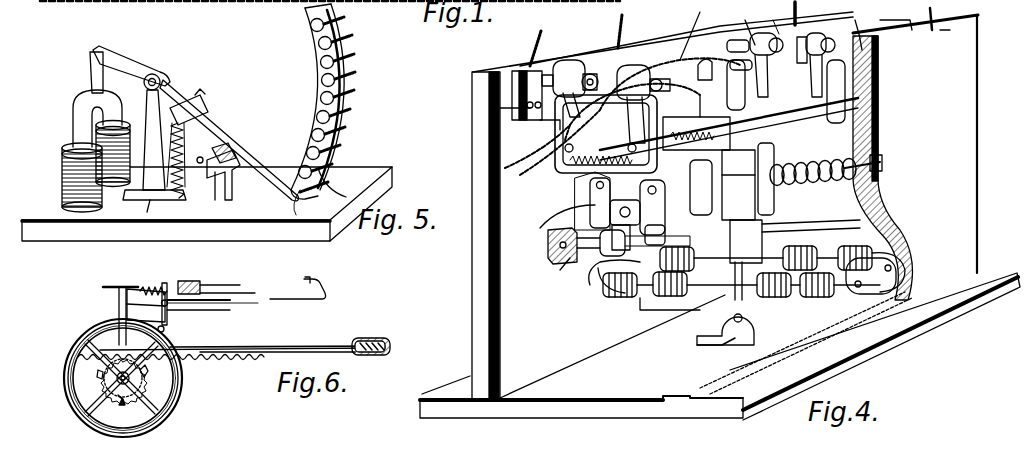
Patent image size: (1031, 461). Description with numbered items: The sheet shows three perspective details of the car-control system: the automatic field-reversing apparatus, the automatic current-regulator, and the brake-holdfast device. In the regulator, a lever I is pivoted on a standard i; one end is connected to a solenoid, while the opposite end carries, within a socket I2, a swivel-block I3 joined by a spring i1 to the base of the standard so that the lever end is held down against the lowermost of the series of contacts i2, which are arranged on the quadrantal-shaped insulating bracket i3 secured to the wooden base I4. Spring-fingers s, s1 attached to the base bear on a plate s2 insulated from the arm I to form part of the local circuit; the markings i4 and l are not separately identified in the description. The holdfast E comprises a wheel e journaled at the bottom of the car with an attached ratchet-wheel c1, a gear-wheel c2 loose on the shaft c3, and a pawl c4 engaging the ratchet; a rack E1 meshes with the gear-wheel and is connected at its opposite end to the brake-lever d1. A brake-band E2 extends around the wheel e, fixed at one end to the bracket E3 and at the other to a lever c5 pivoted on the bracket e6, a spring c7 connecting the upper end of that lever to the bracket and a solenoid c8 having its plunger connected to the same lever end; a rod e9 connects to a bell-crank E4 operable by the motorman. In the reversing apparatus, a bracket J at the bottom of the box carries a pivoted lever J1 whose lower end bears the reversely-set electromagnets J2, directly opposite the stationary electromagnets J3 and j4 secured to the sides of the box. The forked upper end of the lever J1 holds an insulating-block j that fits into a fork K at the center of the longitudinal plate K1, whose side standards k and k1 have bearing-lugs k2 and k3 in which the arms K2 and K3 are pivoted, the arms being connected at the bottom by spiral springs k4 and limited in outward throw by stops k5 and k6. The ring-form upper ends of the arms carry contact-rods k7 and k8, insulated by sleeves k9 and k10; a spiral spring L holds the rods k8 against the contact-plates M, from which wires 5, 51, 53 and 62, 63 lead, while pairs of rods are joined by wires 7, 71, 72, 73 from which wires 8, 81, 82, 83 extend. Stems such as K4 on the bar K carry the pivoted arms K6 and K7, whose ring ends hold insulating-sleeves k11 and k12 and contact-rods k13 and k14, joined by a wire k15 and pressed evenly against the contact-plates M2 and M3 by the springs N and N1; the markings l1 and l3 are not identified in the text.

In FIG. 5, the lever I is at (128, 60).
In FIG. 5, the base I4 is at (64, 170).
In FIG. 5, the swivel-block I3 is at (205, 98).
In FIG. 5, the socket I2 is at (212, 106).
In FIG. 5, the standard i is at (201, 151).
In FIG. 5, the spring i1 is at (347, 74).
In FIG. 5, the series of contacts i2 is at (310, 22).
In FIG. 5, the quadrantal-shaped bracket i3 is at (348, 131).
In FIG. 5, the base plate i4 is at (262, 232).
In FIG. 5, the spring-finger s is at (230, 172).
In FIG. 5, the spring-finger s1 is at (237, 153).
In FIG. 5, the plate s2 is at (236, 138).
In FIG. 5, the lever post / wire loop l is at (147, 212).
In FIG. 4, the lever post / wire loop l is at (605, 298).
In FIG. 6, the holdfast device E is at (180, 386).
In FIG. 6, the rack E1 is at (236, 347).
In FIG. 6, the brake-band E2 is at (180, 399).
In FIG. 6, the bracket E3 is at (167, 321).
In FIG. 6, the bell-crank E4 is at (327, 292).
In FIG. 6, the ratchet-wheel c1 is at (140, 381).
In FIG. 6, the gear-wheel c2 is at (106, 378).
In FIG. 6, the shaft c3 is at (123, 407).
In FIG. 6, the pawl c4 is at (180, 350).
In FIG. 6, the lever c5 is at (212, 311).
In FIG. 6, the spring c7 is at (157, 289).
In FIG. 6, the solenoid c8 is at (194, 281).
In FIG. 6, the wheel e is at (148, 374).
In FIG. 6, the bracket e6 is at (135, 303).
In FIG. 6, the rod e9 is at (227, 293).
In FIG. 6, the brake-lever d1 is at (388, 342).
In FIG. 4, the contact-plates M is at (880, 50).
In FIG. 4, the contact-plate M2 is at (544, 246).
In FIG. 4, the contact-plate M3 is at (657, 307).
In FIG. 4, the wire 5 is at (538, 36).
In FIG. 4, the wire 51 is at (618, 20).
In FIG. 4, the wire 53 is at (798, 10).
In FIG. 4, the wire 62 is at (916, 39).
In FIG. 4, the wire 63 is at (950, 41).
In FIG. 4, the wire 7 is at (630, 116).
In FIG. 4, the wire 71 is at (709, 106).
In FIG. 4, the wire 72 is at (770, 17).
In FIG. 4, the wire 73 is at (896, 19).
In FIG. 4, the wire 8 is at (599, 126).
In FIG. 4, the wire 81 is at (590, 125).
In FIG. 4, the wire 82 is at (851, 25).
In FIG. 4, the wire 83 is at (951, 15).
In FIG. 4, the side standard k is at (545, 124).
In FIG. 4, the side standard k1 is at (650, 170).
In FIG. 4, the bearing-lug k2 is at (569, 203).
In FIG. 4, the bearing-lug k3 is at (602, 212).
In FIG. 4, the spiral springs k4 is at (584, 201).
In FIG. 4, the stop k5 is at (472, 108).
In FIG. 4, the stop k6 is at (670, 118).
In FIG. 4, the contact-rod k7 is at (533, 72).
In FIG. 4, the contact-rod k8 is at (703, 60).
In FIG. 4, the insulating sleeve k9 is at (592, 73).
In FIG. 4, the insulating sleeve k10 is at (690, 30).
In FIG. 4, the insulating-sleeve k11 is at (630, 248).
In FIG. 4, the insulating-sleeve k12 is at (765, 226).
In FIG. 4, the contact-rod k13 is at (565, 262).
In FIG. 4, the contact-rod k14 is at (662, 235).
In FIG. 4, the wire k15 is at (746, 241).
In FIG. 4, the fork K is at (791, 148).
In FIG. 4, the longitudinal plate K1 is at (800, 126).
In FIG. 4, the arm K2 is at (567, 62).
In FIG. 4, the arm K3 is at (635, 66).
In FIG. 4, the stem K4 is at (558, 216).
In FIG. 4, the arm K6 is at (601, 246).
In FIG. 4, the arm K7 is at (668, 196).
In FIG. 4, the spring N is at (612, 230).
In FIG. 4, the spring N1 is at (738, 185).
In FIG. 4, the insulating-block j is at (774, 200).
In FIG. 4, the electromagnet j4 is at (860, 292).
In FIG. 4, the bracket J is at (728, 332).
In FIG. 4, the lever J1 is at (720, 303).
In FIG. 4, the reversely-set electromagnets J2 is at (730, 292).
In FIG. 4, the electromagnet J3 is at (600, 296).
In FIG. 4, the spiral spring L is at (832, 182).
In FIG. 4, the coil set l1 is at (848, 246).
In FIG. 4, the coil set l3 is at (700, 290).